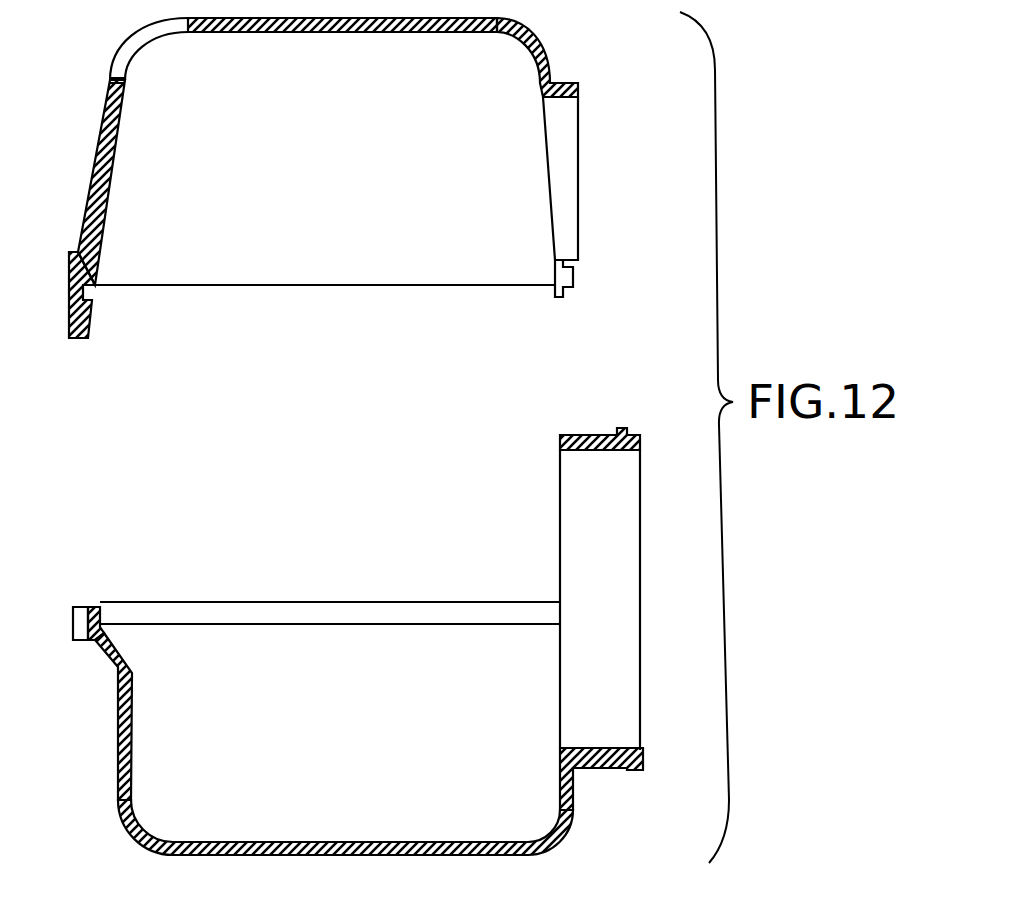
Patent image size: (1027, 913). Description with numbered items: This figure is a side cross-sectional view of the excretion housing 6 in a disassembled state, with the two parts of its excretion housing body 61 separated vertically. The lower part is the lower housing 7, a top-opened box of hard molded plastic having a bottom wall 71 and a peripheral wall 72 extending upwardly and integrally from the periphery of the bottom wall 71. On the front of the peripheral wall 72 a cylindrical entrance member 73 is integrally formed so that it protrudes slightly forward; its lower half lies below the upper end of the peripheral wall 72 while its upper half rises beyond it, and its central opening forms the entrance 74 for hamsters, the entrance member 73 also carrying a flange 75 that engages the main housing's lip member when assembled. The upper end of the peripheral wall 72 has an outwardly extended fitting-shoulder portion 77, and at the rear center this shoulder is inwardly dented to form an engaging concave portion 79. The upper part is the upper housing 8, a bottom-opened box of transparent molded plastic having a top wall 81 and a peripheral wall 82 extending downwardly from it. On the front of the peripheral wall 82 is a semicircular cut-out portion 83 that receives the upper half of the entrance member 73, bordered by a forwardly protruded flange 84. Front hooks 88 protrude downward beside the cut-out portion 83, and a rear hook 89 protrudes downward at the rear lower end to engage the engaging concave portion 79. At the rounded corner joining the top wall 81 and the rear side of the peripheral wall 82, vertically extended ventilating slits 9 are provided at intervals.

The excretion housing 6 is at (303, 368).
The excretion housing body 61 is at (390, 436).
The lower housing 7 is at (348, 553).
The upper housing 8 is at (367, 313).
The ventilating slits 9 is at (138, 48).
The bottom wall 71 is at (323, 837).
The peripheral wall 72 is at (132, 713).
The cylindrical entrance member 73 is at (575, 438).
The entrance 74 is at (602, 645).
The flange 75 is at (635, 768).
The fitting-shoulder portion 77 is at (428, 615).
The engaging concave portion 79 is at (110, 603).
The top wall 81 is at (325, 33).
The peripheral wall 82 is at (107, 182).
The cut-out portion 83 is at (560, 145).
The forwardly protruded flange 84 is at (563, 88).
The front hooks 88 is at (570, 283).
The rear hook 89 is at (81, 325).